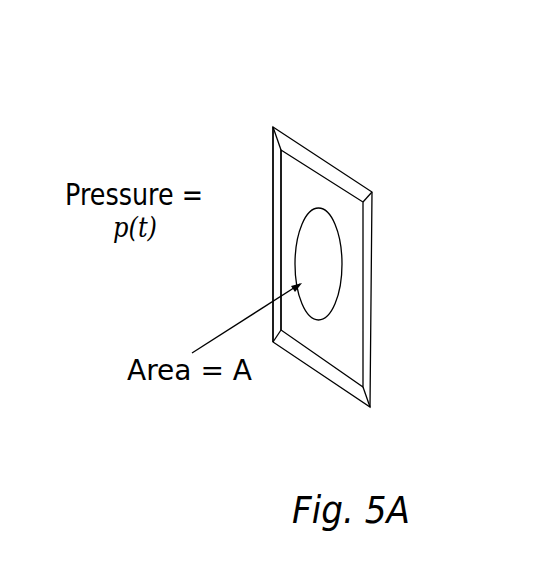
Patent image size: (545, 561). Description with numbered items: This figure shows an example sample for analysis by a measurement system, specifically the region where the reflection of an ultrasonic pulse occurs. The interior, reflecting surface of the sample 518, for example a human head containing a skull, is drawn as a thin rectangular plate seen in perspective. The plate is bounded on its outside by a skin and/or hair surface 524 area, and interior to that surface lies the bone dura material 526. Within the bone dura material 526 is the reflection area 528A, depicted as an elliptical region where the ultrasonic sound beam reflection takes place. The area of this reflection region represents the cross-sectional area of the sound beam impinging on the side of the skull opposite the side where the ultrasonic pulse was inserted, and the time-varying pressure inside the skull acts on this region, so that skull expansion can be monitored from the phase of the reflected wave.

The sample 518 is at (372, 320).
The skin and/or hair surface 524 is at (332, 177).
The bone dura material 526 is at (298, 188).
The reflection area 528A is at (333, 265).